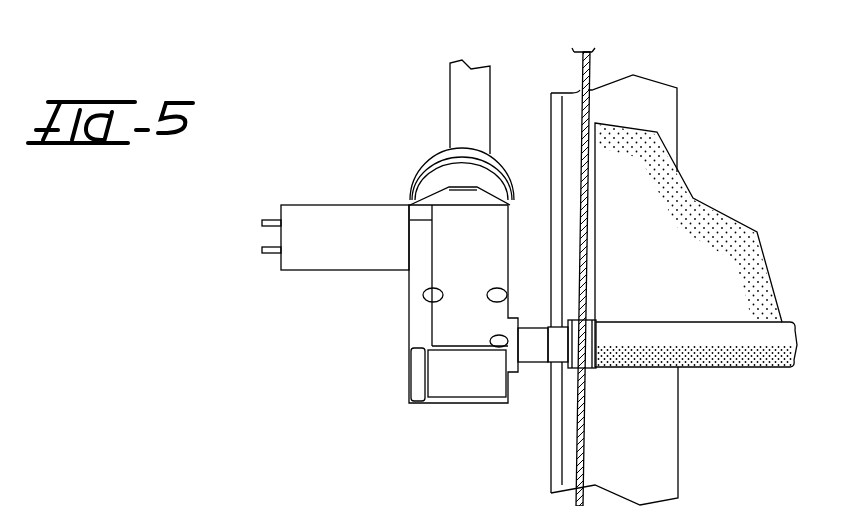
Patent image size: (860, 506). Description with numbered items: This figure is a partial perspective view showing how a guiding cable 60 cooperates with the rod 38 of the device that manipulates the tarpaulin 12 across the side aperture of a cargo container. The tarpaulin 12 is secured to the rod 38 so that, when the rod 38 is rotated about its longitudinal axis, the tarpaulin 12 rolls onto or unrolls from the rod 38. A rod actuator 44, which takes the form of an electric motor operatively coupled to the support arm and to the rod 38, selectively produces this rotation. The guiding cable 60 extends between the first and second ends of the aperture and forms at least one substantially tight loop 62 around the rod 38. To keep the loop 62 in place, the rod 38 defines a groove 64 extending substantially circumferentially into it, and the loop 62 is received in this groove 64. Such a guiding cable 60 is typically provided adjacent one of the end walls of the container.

The tarpaulin 12 is at (681, 287).
The rod 38 is at (580, 348).
The rod actuator 44 is at (453, 252).
The guiding cable 60 is at (585, 73).
The loop 62 is at (583, 325).
The groove 64 is at (570, 360).